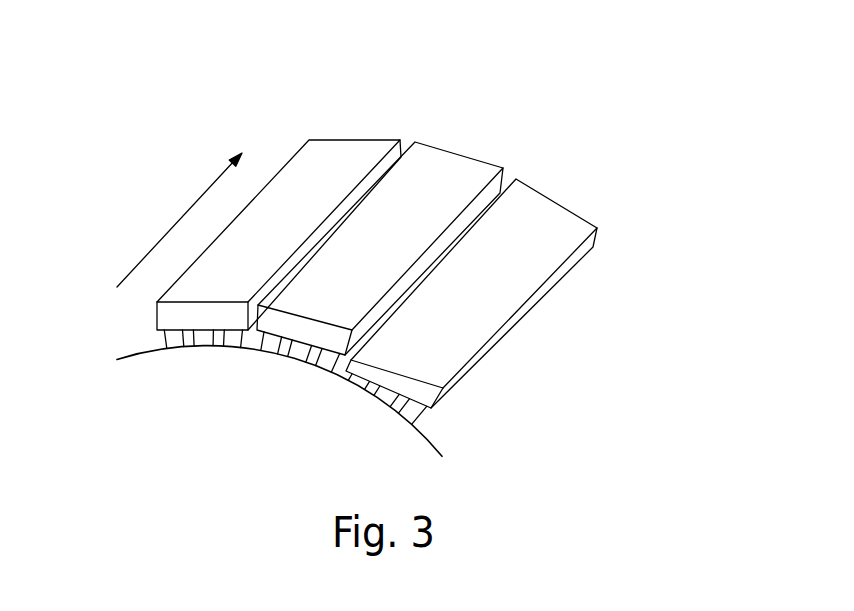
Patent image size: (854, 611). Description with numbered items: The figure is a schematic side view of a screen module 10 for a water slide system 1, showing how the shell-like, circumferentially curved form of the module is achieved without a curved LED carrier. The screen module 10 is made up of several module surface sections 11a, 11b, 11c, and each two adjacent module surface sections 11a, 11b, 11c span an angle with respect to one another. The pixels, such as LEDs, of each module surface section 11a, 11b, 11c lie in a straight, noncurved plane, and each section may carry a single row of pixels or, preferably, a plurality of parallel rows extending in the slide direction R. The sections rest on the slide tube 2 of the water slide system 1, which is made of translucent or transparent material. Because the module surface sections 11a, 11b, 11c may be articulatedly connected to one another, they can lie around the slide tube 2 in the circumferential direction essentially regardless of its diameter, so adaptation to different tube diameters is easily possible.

The water slide system 1 is at (428, 414).
The slide tube 2 is at (293, 366).
The screen module 10 is at (591, 166).
The module surface section 11a is at (352, 150).
The module surface section 11b is at (460, 168).
The module surface section 11c is at (525, 272).